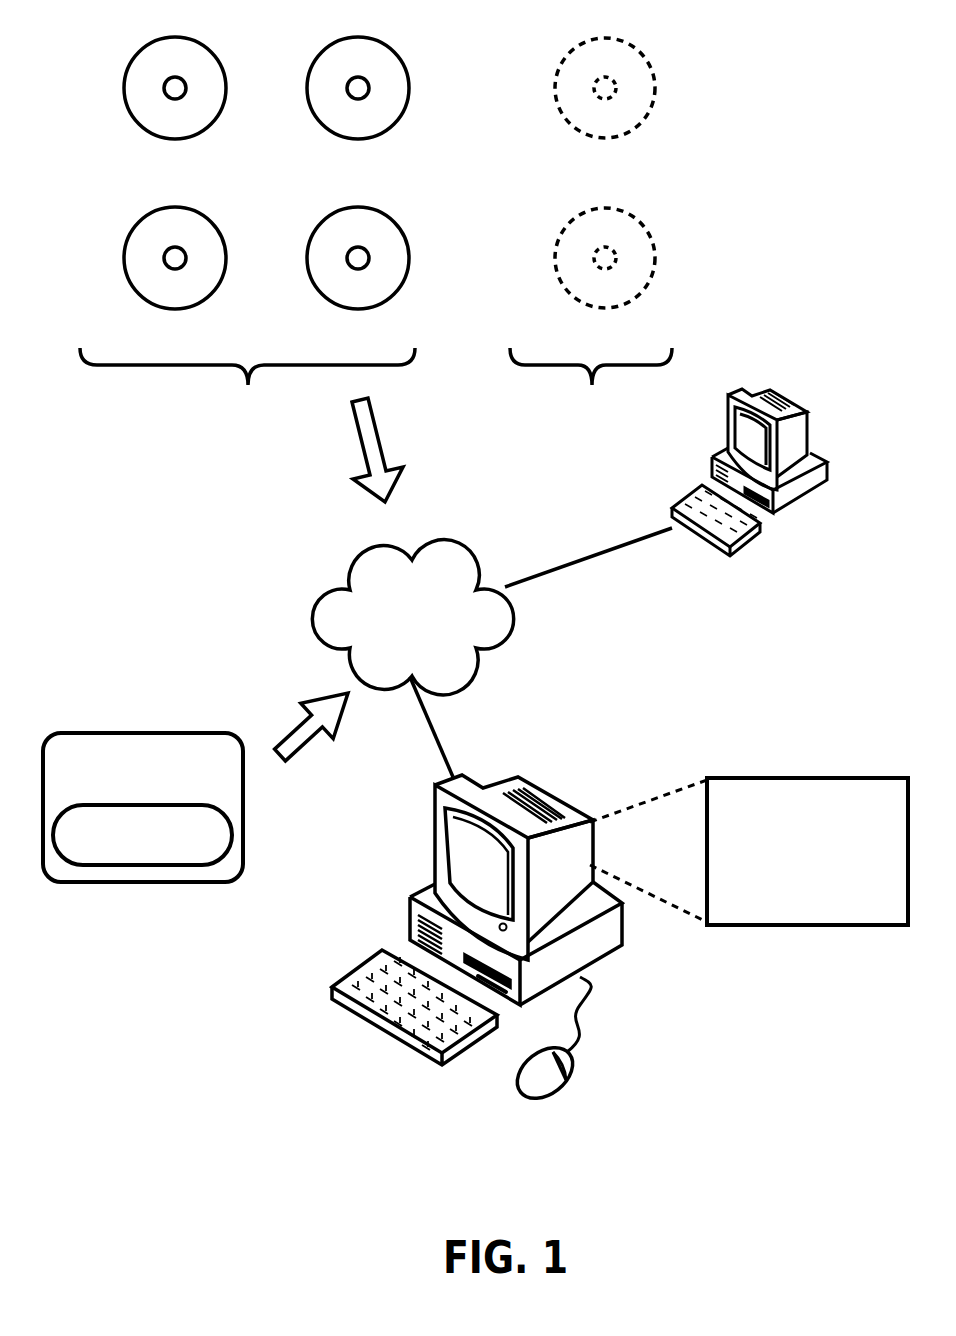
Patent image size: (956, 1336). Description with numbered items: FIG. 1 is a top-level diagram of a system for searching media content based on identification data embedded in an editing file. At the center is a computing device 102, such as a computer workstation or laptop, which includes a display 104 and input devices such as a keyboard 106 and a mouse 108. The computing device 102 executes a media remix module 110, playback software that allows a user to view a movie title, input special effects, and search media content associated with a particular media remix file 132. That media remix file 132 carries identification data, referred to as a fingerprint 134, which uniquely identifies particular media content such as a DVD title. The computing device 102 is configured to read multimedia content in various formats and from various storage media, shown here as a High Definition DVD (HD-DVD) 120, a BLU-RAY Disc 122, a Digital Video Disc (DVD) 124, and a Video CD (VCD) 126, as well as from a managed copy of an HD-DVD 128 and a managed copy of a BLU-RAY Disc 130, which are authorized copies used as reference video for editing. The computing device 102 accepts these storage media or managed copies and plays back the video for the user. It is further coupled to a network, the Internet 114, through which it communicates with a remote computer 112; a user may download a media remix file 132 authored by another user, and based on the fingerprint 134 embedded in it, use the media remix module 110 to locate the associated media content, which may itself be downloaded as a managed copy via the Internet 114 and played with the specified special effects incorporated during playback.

The computing device 102 is at (479, 905).
The display 104 is at (436, 862).
The keyboard 106 is at (395, 1038).
The mouse 108 is at (520, 1093).
The media remix module 110 is at (797, 778).
The remote computer 112 is at (808, 382).
The Internet 114 is at (392, 645).
The High Definition DVD (HD-DVD) 120 is at (149, 301).
The BLU-RAY Disc 122 is at (149, 131).
The Digital Video Disc (DVD) 124 is at (325, 295).
The Video CD (VCD) 126 is at (325, 125).
The managed copy of an HD-DVD 128 is at (578, 298).
The managed copy of a BLU-RAY Disc 130 is at (578, 128).
The media remix file 132 is at (169, 791).
The fingerprint 134 is at (222, 808).